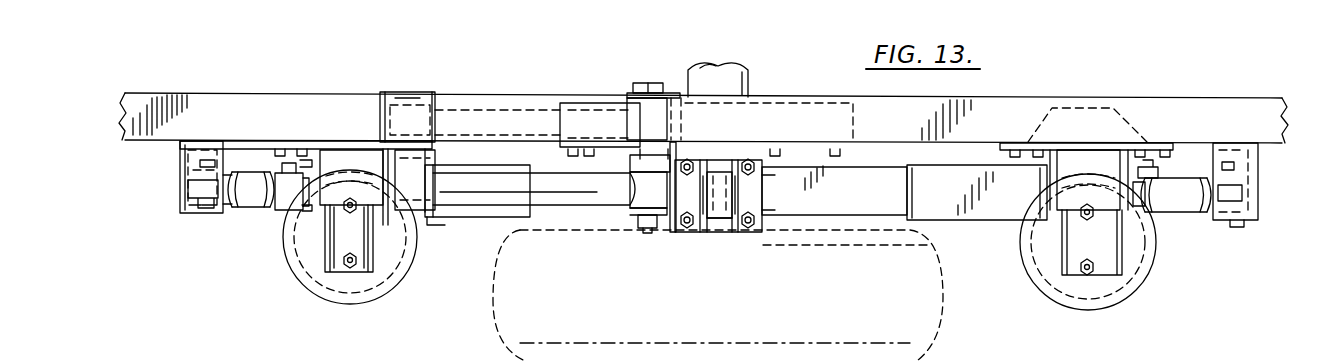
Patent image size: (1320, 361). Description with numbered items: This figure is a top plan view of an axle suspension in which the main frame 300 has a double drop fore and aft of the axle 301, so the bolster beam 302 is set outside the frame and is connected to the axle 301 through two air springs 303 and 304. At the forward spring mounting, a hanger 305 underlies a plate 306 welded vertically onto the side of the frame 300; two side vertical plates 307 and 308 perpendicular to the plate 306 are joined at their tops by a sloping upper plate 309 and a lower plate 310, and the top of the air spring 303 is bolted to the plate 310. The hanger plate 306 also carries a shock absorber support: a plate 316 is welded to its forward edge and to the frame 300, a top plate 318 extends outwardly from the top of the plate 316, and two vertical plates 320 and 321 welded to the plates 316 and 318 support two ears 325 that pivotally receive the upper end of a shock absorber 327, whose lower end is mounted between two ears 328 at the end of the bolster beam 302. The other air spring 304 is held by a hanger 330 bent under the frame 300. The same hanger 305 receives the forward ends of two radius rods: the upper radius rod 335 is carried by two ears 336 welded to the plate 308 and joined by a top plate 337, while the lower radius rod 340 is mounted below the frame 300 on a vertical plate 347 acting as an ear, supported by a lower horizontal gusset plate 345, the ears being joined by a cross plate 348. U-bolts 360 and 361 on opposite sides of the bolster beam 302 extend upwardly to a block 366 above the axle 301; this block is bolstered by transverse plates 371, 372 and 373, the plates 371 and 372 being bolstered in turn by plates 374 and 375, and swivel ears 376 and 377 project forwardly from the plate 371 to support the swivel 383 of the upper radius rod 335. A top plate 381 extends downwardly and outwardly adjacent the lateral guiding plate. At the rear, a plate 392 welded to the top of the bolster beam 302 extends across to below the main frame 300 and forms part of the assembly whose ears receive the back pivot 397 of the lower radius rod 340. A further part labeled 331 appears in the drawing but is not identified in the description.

The main frame 300 is at (1018, 100).
The axle 301 is at (749, 74).
The bolster beam 302 is at (880, 216).
The air spring 303 is at (403, 280).
The air spring 304 is at (1136, 283).
The hanger 305 is at (358, 274).
The plate 306 is at (290, 140).
The side vertical plate 307 is at (334, 272).
The side vertical plate 308 is at (382, 266).
The sloping upper plate 309 is at (1082, 152).
The lower plate 310 is at (321, 264).
The plate 316 is at (237, 141).
The top plate 318 is at (1242, 164).
The vertical plate 320 is at (181, 198).
The vertical plate 321 is at (180, 152).
The ears 325 is at (240, 209).
The shock absorber 327 is at (268, 215).
The ears 328 is at (280, 175).
The hanger 330 is at (1078, 276).
The right coupling sleeve 331 is at (1158, 147).
The upper radius rod 335 is at (500, 196).
The ears 336 is at (440, 160).
The top plate 337 is at (432, 210).
The lower radius rod 340 is at (498, 122).
The lower horizontal gusset plate 345 is at (376, 96).
The vertical plate 347 is at (418, 100).
The cross plate 348 is at (410, 98).
The U-bolt 360 is at (740, 236).
The U-bolt 361 is at (760, 162).
The block 366 is at (762, 186).
The transverse plate 371 is at (680, 214).
The transverse plate 372 is at (707, 208).
The transverse plate 373 is at (726, 228).
The plate 374 is at (686, 212).
The plate 375 is at (690, 176).
The swivel ear 376 is at (636, 214).
The swivel ear 377 is at (622, 174).
The top plate 381 is at (720, 208).
The swivel 383 is at (648, 232).
The plate 392 is at (578, 105).
The back pivot 397 is at (655, 83).